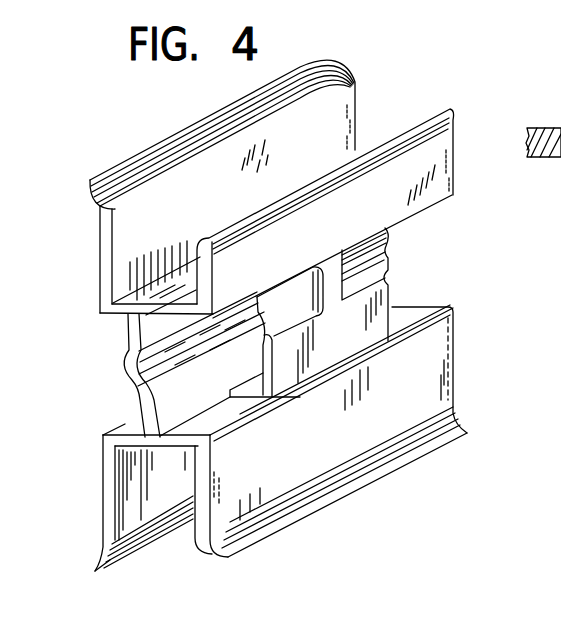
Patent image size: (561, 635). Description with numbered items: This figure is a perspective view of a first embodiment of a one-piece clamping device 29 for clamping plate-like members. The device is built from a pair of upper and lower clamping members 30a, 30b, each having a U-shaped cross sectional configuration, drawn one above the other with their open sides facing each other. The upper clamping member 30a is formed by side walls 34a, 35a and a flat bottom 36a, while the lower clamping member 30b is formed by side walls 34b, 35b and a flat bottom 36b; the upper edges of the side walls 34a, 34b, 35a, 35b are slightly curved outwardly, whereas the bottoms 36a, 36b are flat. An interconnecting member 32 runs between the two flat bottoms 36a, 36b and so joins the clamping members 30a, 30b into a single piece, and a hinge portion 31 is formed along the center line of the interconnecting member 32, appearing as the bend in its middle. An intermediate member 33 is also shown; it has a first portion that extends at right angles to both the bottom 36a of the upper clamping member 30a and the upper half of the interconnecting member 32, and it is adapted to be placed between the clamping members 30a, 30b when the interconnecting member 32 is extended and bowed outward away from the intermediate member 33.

The one-piece clamping device 29 is at (505, 208).
The upper clamping member 30a is at (100, 292).
The lower clamping member 30b is at (396, 448).
The hinge portion 31 is at (124, 368).
The interconnecting member 32 is at (126, 349).
The intermediate member 33 is at (332, 283).
The side wall 34a is at (99, 213).
The side wall 34b is at (117, 559).
The side wall 35a is at (451, 110).
The side wall 35b is at (203, 550).
The bottom 36a is at (128, 313).
The bottom 36b is at (160, 450).